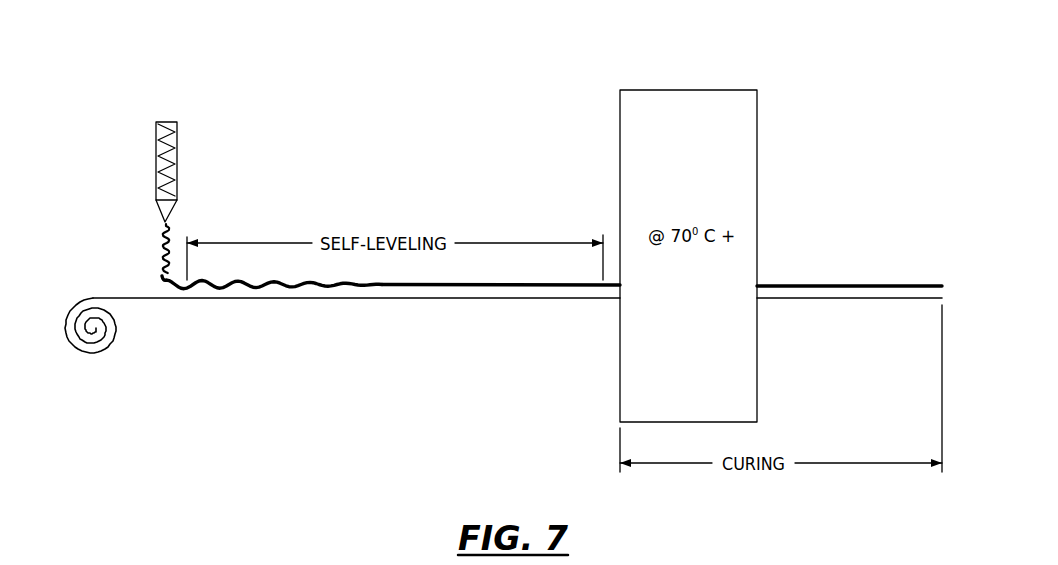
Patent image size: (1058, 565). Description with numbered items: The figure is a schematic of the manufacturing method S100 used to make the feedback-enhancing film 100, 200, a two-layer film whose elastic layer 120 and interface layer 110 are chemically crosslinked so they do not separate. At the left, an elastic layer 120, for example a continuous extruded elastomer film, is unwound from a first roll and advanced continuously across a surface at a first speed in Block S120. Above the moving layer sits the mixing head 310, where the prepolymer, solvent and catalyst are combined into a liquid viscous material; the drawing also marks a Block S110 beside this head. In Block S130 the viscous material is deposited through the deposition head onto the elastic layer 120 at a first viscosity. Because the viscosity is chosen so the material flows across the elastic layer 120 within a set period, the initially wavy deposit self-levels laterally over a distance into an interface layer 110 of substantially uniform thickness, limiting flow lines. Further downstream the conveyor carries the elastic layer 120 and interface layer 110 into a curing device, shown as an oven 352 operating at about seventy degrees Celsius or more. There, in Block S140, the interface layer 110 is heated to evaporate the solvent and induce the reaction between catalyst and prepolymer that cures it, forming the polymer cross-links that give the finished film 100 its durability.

The manufacturing method S100 is at (127, 90).
The film 100 is at (69, 52).
The coated product 200 is at (124, 52).
The mixing head 310 is at (156, 145).
The dispensing step S110 is at (190, 153).
The depositing block S130 is at (155, 241).
The elastic layer 120 is at (173, 299).
The advancing block S120 is at (339, 313).
The interface layer 110 is at (495, 287).
The oven 352 is at (655, 120).
The heating block S140 is at (706, 150).